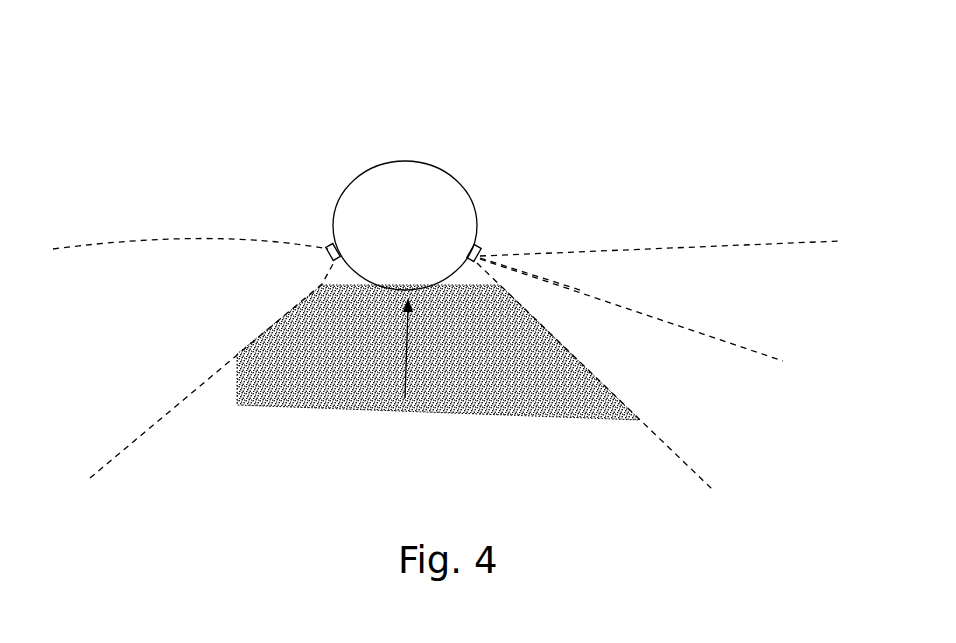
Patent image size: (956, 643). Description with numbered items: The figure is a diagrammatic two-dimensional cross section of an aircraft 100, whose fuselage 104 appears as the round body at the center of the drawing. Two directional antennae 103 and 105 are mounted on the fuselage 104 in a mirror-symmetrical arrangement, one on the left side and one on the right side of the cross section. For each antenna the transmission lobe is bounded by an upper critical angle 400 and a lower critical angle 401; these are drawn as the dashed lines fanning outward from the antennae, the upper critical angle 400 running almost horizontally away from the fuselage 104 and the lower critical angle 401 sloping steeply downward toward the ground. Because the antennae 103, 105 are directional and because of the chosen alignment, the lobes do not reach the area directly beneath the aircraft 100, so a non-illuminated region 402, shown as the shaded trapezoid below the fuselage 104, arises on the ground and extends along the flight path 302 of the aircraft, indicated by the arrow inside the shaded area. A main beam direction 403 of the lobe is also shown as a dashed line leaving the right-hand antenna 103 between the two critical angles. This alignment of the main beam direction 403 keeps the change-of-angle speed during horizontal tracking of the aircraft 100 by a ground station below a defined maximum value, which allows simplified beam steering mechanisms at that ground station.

The aircraft 100 is at (341, 130).
The fuselage 104 is at (425, 163).
The directional antenna 105 is at (321, 245).
The directional antenna 103 is at (485, 250).
The upper critical angle 400 is at (101, 243).
The lower critical angle 401 is at (150, 430).
The main beam direction 403 is at (757, 353).
The non-illuminated region 402 is at (318, 403).
The flight path 302 is at (420, 383).